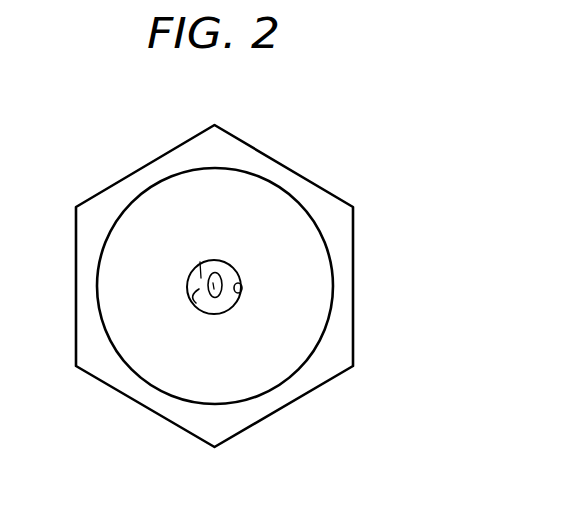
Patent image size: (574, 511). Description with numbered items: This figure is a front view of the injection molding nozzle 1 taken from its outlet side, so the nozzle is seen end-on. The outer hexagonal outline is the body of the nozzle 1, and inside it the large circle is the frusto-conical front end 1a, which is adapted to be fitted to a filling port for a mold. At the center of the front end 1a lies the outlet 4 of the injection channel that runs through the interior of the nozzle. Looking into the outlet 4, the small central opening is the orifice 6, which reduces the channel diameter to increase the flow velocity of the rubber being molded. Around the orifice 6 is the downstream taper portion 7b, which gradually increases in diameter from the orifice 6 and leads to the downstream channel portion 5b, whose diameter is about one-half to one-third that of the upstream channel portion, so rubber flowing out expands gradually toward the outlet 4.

The injection molding nozzle 1 is at (334, 160).
The front end 1a is at (267, 272).
The outlet 4 is at (197, 305).
The downstream channel portion 5b is at (240, 295).
The orifice 6 is at (218, 297).
The taper portion 7b is at (200, 270).